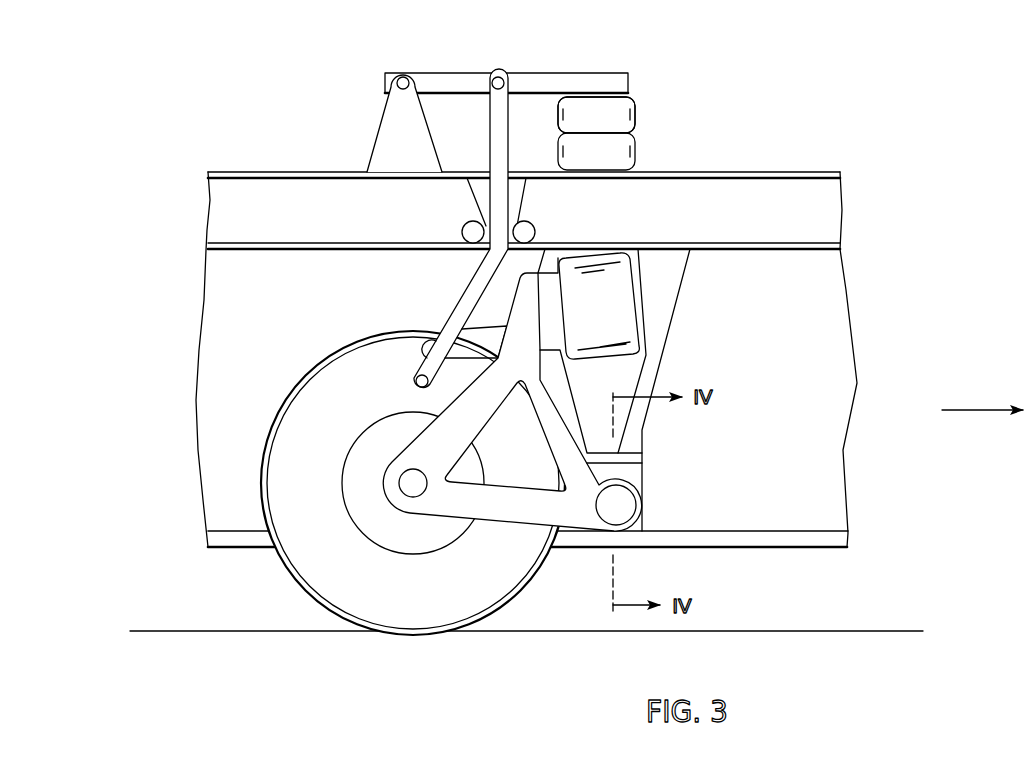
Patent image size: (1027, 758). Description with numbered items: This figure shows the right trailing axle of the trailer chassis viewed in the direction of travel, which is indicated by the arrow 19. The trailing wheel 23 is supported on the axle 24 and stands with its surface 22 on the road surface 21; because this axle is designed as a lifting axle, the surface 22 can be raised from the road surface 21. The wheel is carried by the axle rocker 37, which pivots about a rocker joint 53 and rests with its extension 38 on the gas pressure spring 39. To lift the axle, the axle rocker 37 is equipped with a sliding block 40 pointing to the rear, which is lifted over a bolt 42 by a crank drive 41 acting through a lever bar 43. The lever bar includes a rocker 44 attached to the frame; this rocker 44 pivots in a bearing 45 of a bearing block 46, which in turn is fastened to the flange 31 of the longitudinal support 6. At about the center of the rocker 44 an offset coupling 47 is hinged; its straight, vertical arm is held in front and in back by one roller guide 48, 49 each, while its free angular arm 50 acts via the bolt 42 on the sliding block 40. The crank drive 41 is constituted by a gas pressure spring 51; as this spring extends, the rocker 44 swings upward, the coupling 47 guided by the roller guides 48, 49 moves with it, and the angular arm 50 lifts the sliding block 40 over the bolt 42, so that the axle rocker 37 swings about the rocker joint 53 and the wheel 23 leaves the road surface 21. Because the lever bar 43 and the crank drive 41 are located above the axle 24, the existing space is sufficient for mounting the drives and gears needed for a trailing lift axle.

The longitudinal support 6 is at (882, 295).
The direction of travel 19 is at (970, 410).
The road surface 21 is at (815, 631).
The surface 22 is at (510, 606).
The trailing wheel 23 is at (453, 600).
The axle 24 is at (408, 486).
The flange 31 is at (823, 215).
The axle rocker 37 is at (535, 515).
The extension 38 is at (525, 292).
The gas pressure spring 39 is at (645, 263).
The sliding block 40 is at (470, 348).
The crank drive 41 is at (650, 128).
The bolt 42 is at (415, 378).
The lever bar 43 is at (527, 65).
The rocker 44 is at (450, 82).
The bearing 45 is at (388, 83).
The bearing block 46 is at (385, 133).
The offset coupling 47 is at (497, 188).
The roller guide 48 is at (533, 229).
The roller guide 49 is at (462, 232).
The free angular arm 50 is at (477, 283).
The gas pressure spring 51 is at (627, 108).
The rocker joint 53 is at (662, 503).